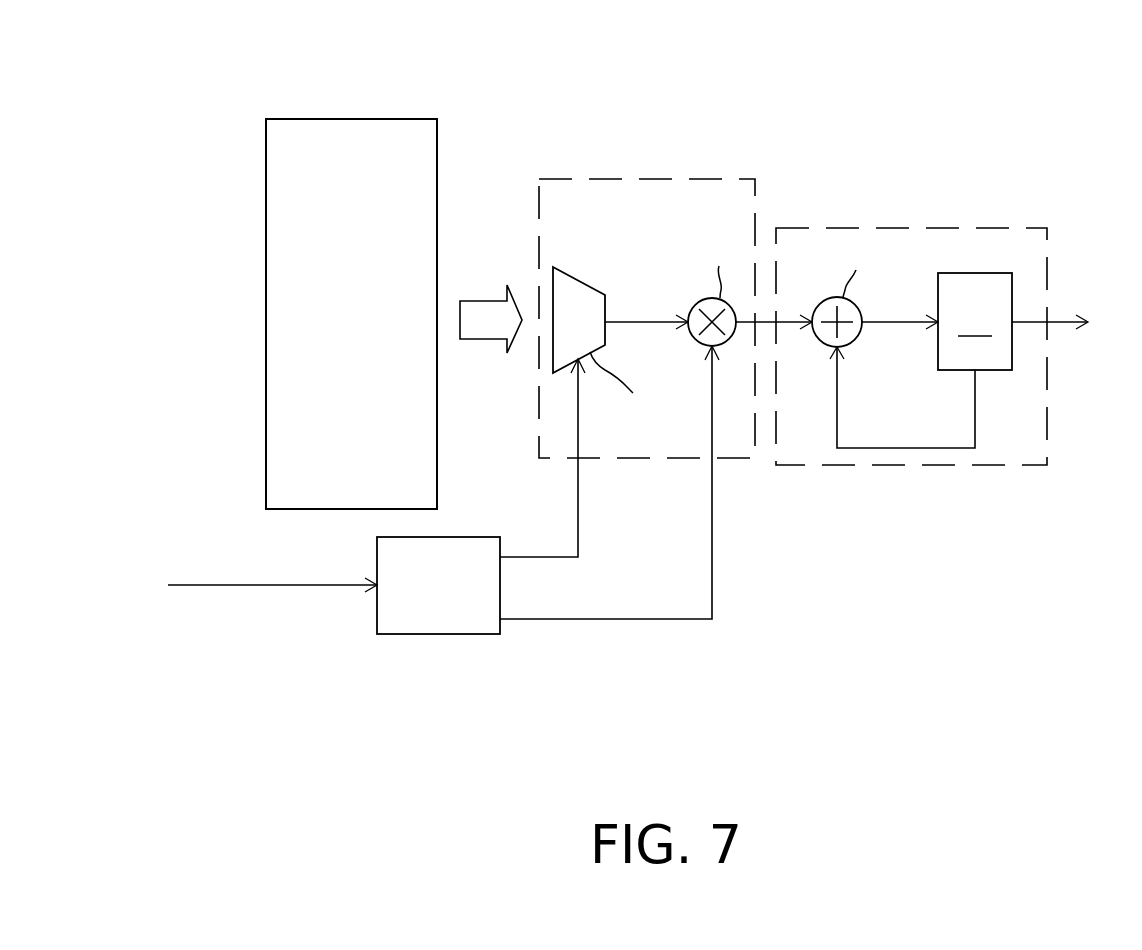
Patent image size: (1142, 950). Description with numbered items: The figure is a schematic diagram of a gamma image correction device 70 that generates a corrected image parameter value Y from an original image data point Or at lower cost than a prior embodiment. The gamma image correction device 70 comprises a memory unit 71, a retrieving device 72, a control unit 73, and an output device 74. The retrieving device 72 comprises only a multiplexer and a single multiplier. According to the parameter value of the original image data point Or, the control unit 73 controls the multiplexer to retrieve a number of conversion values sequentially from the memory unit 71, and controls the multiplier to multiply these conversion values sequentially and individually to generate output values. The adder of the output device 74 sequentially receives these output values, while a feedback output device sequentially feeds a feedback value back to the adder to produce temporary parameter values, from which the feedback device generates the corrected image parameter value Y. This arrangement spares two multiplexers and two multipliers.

The gamma image correction device 70 is at (248, 678).
The memory unit 71 is at (357, 119).
The retrieving device 72 is at (652, 178).
The control unit 73 is at (444, 634).
The output device 74 is at (930, 228).